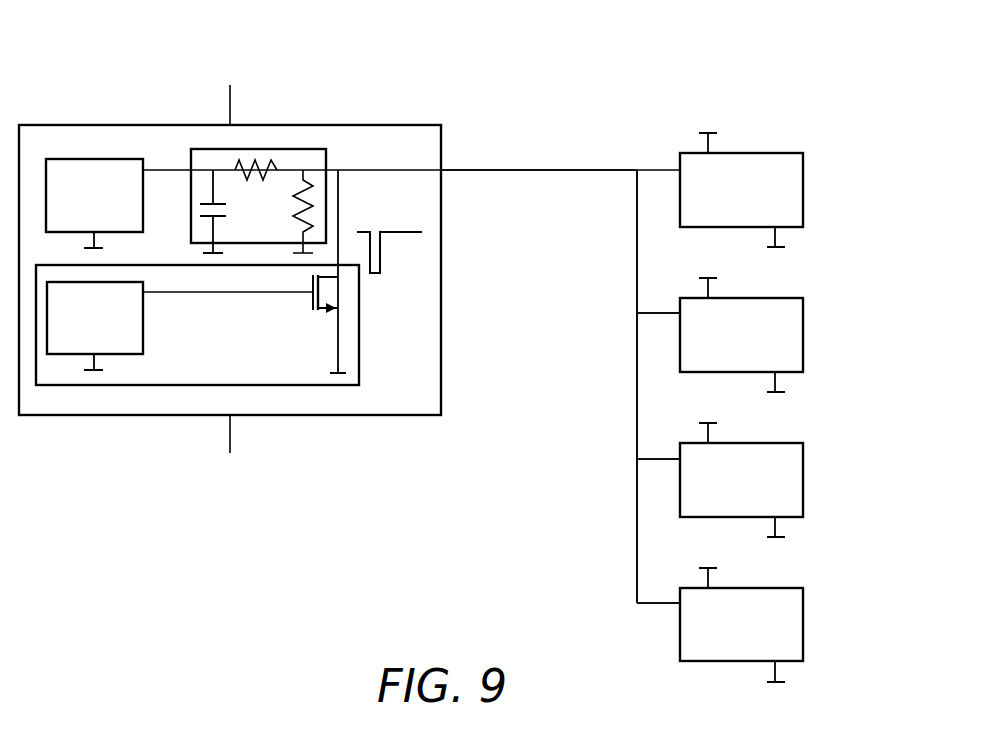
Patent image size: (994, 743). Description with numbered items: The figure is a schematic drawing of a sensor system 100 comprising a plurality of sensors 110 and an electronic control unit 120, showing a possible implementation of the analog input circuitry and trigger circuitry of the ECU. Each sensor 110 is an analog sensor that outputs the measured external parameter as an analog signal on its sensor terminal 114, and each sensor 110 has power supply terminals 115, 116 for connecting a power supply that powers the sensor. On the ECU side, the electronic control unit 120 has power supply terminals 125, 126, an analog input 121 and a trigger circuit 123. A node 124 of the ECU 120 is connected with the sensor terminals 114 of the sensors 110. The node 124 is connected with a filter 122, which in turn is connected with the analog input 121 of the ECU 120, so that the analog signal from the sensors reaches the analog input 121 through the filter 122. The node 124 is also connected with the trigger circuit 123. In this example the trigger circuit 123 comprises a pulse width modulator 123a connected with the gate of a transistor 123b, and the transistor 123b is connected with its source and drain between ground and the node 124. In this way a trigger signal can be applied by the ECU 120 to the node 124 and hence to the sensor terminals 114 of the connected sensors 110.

The sensor system 100 is at (146, 538).
The sensor 110 is at (763, 201).
The sensor terminal 114 is at (650, 170).
The power supply terminal 115 is at (717, 135).
The power supply terminal 116 is at (785, 243).
The electronic control unit 120 is at (44, 125).
The analog input 121 is at (116, 206).
The filter 122 is at (282, 230).
The trigger circuit 123 is at (359, 364).
The pulse width modulator 123a is at (122, 330).
The transistor 123b is at (313, 307).
The node 124 is at (467, 170).
The power supply terminal 125 is at (231, 101).
The power supply terminal 126 is at (232, 437).